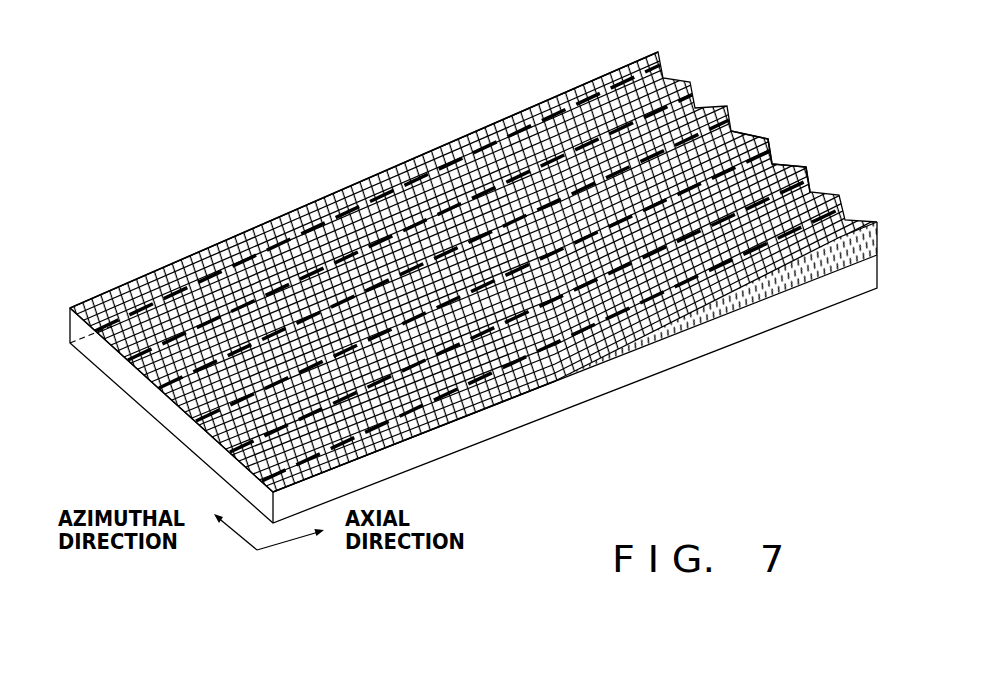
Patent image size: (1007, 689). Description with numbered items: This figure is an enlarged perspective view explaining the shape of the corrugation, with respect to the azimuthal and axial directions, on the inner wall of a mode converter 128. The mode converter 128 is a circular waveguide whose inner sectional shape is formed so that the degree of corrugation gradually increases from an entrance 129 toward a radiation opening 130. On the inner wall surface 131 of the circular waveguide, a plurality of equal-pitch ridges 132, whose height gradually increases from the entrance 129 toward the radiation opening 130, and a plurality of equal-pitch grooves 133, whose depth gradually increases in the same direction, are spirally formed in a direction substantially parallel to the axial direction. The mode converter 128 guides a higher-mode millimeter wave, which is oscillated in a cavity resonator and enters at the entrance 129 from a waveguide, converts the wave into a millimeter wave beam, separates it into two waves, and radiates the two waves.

The mode converter 128 is at (425, 150).
The entrance 129 is at (137, 388).
The radiation opening 130 is at (634, 60).
The inner wall surface 131 is at (492, 411).
The ridges 132 is at (768, 139).
The grooves 133 is at (780, 167).